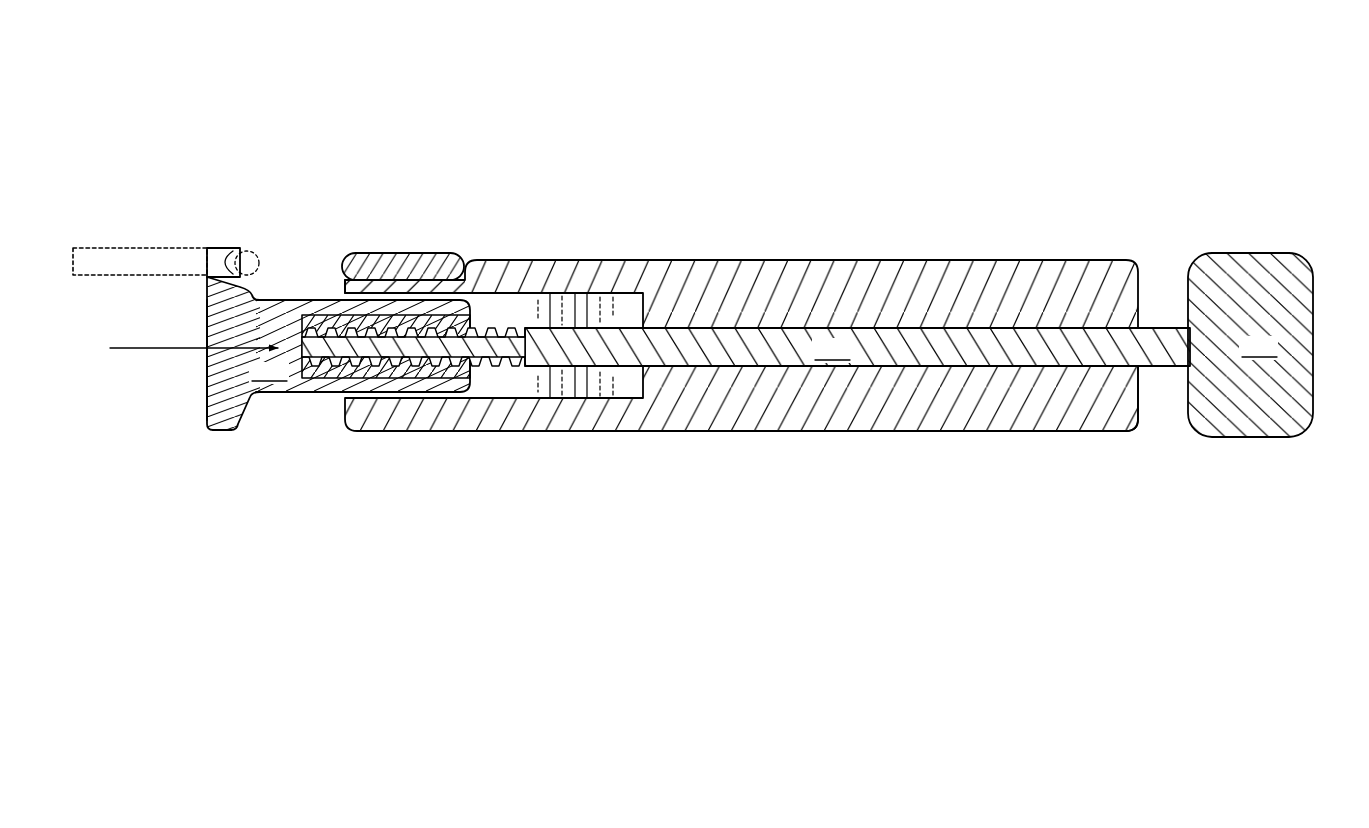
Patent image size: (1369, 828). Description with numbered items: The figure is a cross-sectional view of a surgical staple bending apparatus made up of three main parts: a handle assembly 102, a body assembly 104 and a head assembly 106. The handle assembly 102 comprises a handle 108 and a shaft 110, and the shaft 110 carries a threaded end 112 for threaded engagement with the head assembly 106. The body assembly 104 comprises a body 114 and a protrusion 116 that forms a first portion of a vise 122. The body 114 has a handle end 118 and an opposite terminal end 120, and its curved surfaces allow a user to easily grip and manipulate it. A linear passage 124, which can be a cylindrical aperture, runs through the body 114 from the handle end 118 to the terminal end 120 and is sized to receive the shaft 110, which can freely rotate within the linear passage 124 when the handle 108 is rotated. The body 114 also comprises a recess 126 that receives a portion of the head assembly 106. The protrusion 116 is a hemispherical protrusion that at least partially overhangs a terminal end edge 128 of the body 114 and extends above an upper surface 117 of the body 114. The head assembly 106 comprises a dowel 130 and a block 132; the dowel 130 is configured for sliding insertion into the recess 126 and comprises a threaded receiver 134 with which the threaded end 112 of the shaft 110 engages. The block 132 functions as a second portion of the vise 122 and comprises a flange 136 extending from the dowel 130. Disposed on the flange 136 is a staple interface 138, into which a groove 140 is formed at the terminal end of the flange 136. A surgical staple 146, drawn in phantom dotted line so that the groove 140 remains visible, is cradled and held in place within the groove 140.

The handle assembly 102 is at (1242, 218).
The body assembly 104 is at (1005, 228).
The head assembly 106 is at (190, 422).
The handle 108 is at (1277, 357).
The shaft 110 is at (850, 360).
The threaded end 112 is at (483, 323).
The body 114 is at (880, 420).
The protrusion 116 is at (404, 255).
The upper surface 117 is at (900, 260).
The handle end 118 is at (1055, 443).
The terminal end 120 is at (338, 414).
The vise 122 is at (305, 150).
The linear passage 124 is at (982, 367).
The recess 126 is at (567, 380).
The terminal end edge 128 is at (343, 288).
The dowel 130 is at (287, 381).
The block 132 is at (204, 440).
The threaded receiver 134 is at (322, 365).
The flange 136 is at (217, 367).
The staple interface 138 is at (230, 222).
The groove 140 is at (238, 255).
The surgical staple 146 is at (110, 248).